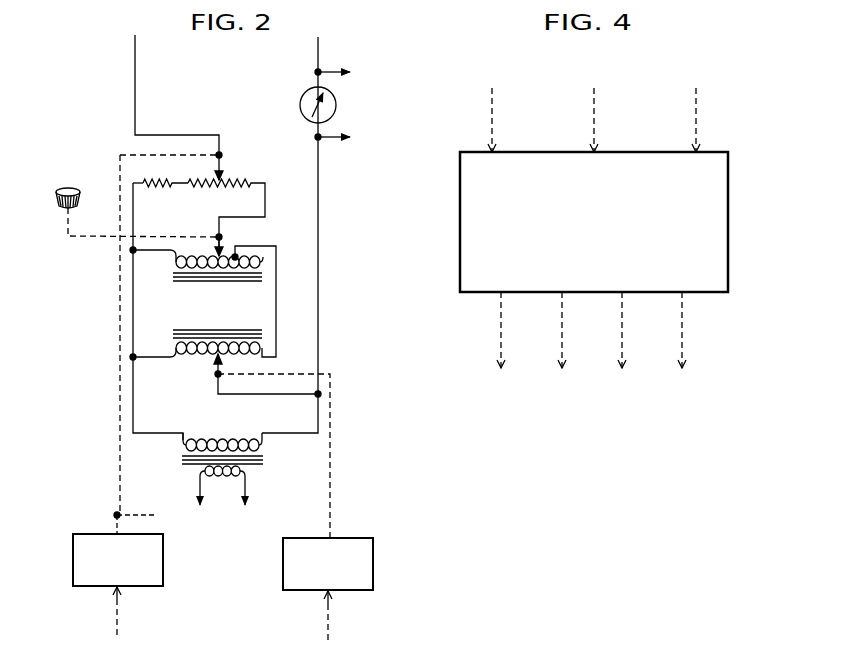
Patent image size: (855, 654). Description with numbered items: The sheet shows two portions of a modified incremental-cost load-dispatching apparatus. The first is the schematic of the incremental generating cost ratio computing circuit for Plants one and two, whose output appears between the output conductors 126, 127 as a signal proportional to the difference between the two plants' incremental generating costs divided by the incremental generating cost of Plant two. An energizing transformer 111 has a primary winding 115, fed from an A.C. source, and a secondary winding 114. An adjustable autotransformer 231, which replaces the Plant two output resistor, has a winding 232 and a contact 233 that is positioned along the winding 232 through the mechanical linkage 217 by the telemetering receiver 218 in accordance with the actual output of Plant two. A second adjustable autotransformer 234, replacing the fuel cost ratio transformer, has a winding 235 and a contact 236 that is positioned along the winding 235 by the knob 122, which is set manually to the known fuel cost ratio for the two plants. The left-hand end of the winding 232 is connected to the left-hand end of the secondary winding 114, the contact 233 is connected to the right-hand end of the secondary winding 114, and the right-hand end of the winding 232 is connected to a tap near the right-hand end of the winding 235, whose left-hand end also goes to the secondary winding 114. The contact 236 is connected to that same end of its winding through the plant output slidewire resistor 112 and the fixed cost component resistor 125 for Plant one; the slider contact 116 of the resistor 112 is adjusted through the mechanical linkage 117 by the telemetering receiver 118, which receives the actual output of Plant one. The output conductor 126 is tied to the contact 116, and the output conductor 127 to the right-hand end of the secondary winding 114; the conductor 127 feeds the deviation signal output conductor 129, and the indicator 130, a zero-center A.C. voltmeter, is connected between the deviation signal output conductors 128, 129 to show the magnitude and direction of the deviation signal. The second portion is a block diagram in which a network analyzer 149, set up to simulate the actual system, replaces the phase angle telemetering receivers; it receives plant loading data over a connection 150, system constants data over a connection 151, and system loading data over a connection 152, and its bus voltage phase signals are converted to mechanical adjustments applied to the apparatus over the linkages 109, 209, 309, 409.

In FIG. 2, the output conductor 126 is at (135, 83).
In FIG. 2, the output conductor 127 is at (318, 285).
In FIG. 2, the deviation signal output conductor 128 is at (334, 71).
In FIG. 2, the deviation signal output conductor 129 is at (333, 139).
In FIG. 2, the indicator 130 is at (300, 102).
In FIG. 2, the fixed cost component resistor 125 is at (157, 188).
In FIG. 2, the plant output slidewire resistor 112 is at (218, 188).
In FIG. 2, the slider contact 116 is at (222, 178).
In FIG. 2, the mechanical linkage 117 is at (119, 289).
In FIG. 2, the knob 122 is at (58, 203).
In FIG. 2, the adjustable autotransformer 234 is at (273, 236).
In FIG. 2, the winding 235 is at (198, 255).
In FIG. 2, the contact 236 is at (222, 256).
In FIG. 2, the adjustable autotransformer 231 is at (254, 325).
In FIG. 2, the winding 232 is at (196, 363).
In FIG. 2, the contact 233 is at (223, 370).
In FIG. 2, the mechanical linkage 217 is at (331, 461).
In FIG. 2, the secondary winding 114 is at (228, 440).
In FIG. 2, the transformer 111 is at (181, 462).
In FIG. 2, the primary winding 115 is at (222, 485).
In FIG. 2, the telemetering receiver 118 is at (95, 533).
In FIG. 2, the telemetering receiver 218 is at (345, 538).
In FIG. 4, the network analyzer 149 is at (715, 193).
In FIG. 4, the connection 150 is at (492, 105).
In FIG. 4, the connection 151 is at (594, 105).
In FIG. 4, the connection 152 is at (696, 105).
In FIG. 4, the linkage 109 is at (500, 326).
In FIG. 4, the linkage 209 is at (561, 326).
In FIG. 4, the linkage 309 is at (621, 326).
In FIG. 4, the linkage 409 is at (681, 326).